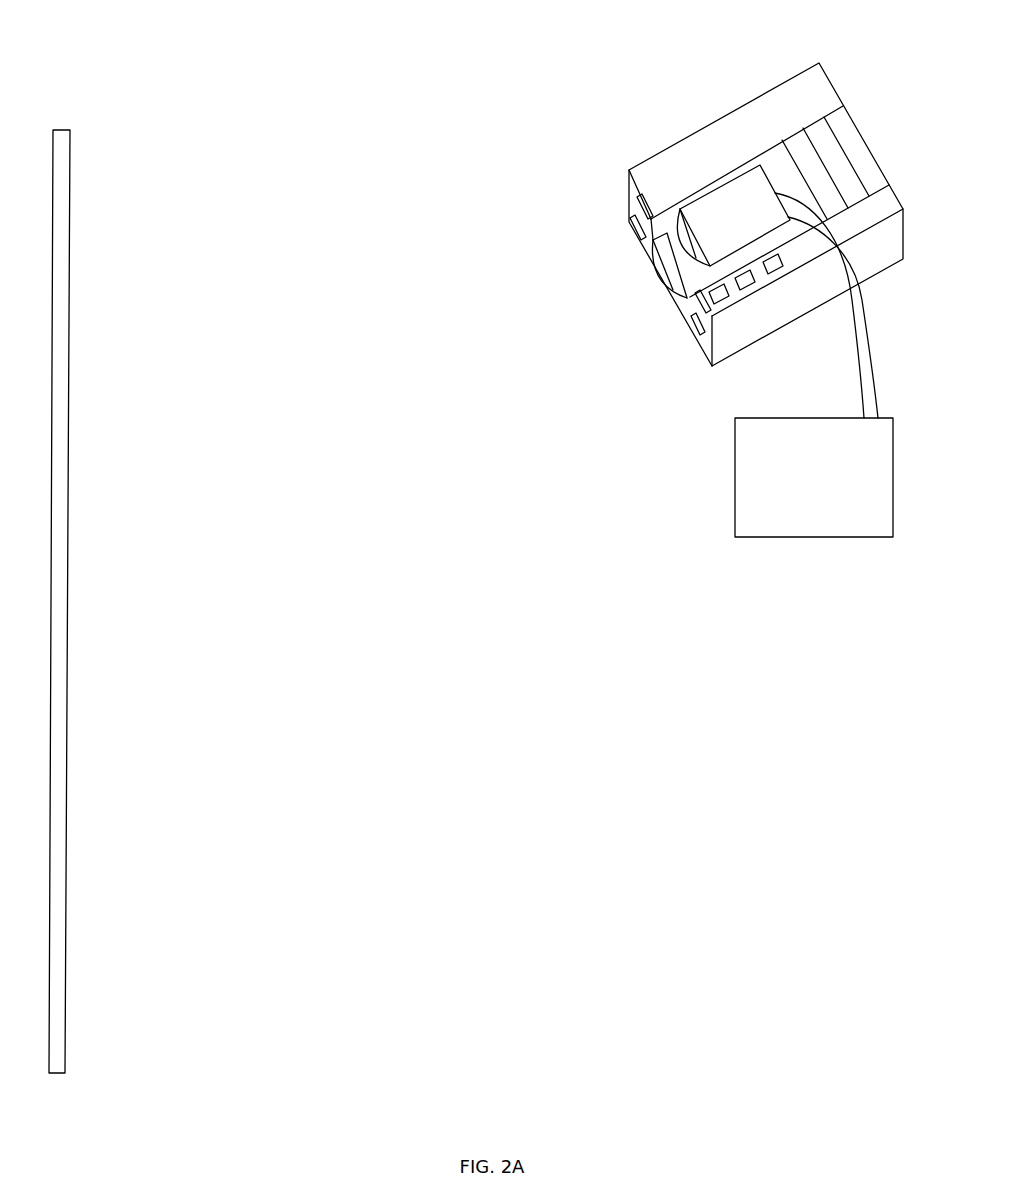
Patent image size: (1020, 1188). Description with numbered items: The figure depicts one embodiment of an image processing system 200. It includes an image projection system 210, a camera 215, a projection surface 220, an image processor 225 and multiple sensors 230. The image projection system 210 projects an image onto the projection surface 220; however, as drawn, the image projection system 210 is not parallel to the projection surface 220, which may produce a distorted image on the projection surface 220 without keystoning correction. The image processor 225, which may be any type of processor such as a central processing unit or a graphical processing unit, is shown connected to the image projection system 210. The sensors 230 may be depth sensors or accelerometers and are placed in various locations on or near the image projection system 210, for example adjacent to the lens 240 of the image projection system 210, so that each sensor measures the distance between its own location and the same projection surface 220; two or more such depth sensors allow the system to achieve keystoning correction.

The image processing system 200 is at (476, 543).
The image projection system 210 is at (799, 100).
The camera 215 is at (727, 210).
The projection surface 220 is at (70, 129).
The image processor 225 is at (814, 477).
The sensors 230 is at (693, 325).
The lens 240 is at (658, 275).